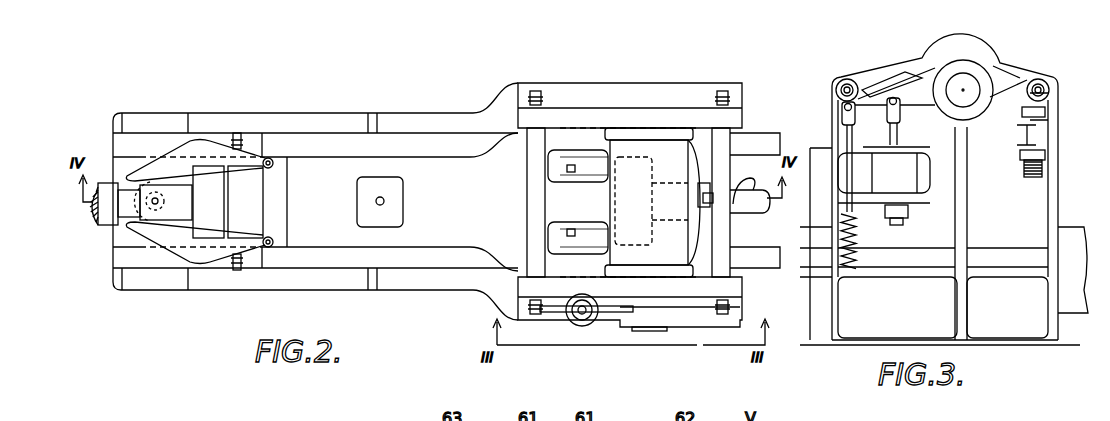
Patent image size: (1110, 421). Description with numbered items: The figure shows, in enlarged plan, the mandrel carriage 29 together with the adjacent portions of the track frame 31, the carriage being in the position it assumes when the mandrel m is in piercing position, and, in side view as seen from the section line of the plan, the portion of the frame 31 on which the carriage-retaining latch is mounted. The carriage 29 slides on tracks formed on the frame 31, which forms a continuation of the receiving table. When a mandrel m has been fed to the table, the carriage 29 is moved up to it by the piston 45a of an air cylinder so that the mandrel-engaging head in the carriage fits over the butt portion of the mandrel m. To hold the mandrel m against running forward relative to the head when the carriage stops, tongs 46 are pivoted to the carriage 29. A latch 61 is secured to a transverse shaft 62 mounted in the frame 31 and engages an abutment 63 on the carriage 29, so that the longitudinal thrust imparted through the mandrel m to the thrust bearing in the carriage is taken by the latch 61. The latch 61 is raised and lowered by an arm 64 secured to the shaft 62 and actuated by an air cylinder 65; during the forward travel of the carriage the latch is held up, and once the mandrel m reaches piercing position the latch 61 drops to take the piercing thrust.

In FIG. 2, the mandrel carriage 29 is at (426, 184).
In FIG. 2, the frame 31 is at (307, 122).
In FIG. 3, the frame 31 is at (1072, 255).
In FIG. 2, the tongs 46 is at (182, 150).
In FIG. 2, the mandrel m is at (112, 228).
In FIG. 2, the abutment 63 is at (552, 197).
In FIG. 2, the latch 61 is at (600, 214).
In FIG. 2, the piston 45a is at (752, 202).
In FIG. 2, the arm 64 is at (553, 320).
In FIG. 3, the arm 64 is at (878, 98).
In FIG. 2, the air cylinder 65 is at (583, 327).
In FIG. 3, the air cylinder 65 is at (917, 187).
In FIG. 2, the transverse shaft 62 is at (657, 332).
In FIG. 3, the transverse shaft 62 is at (966, 89).